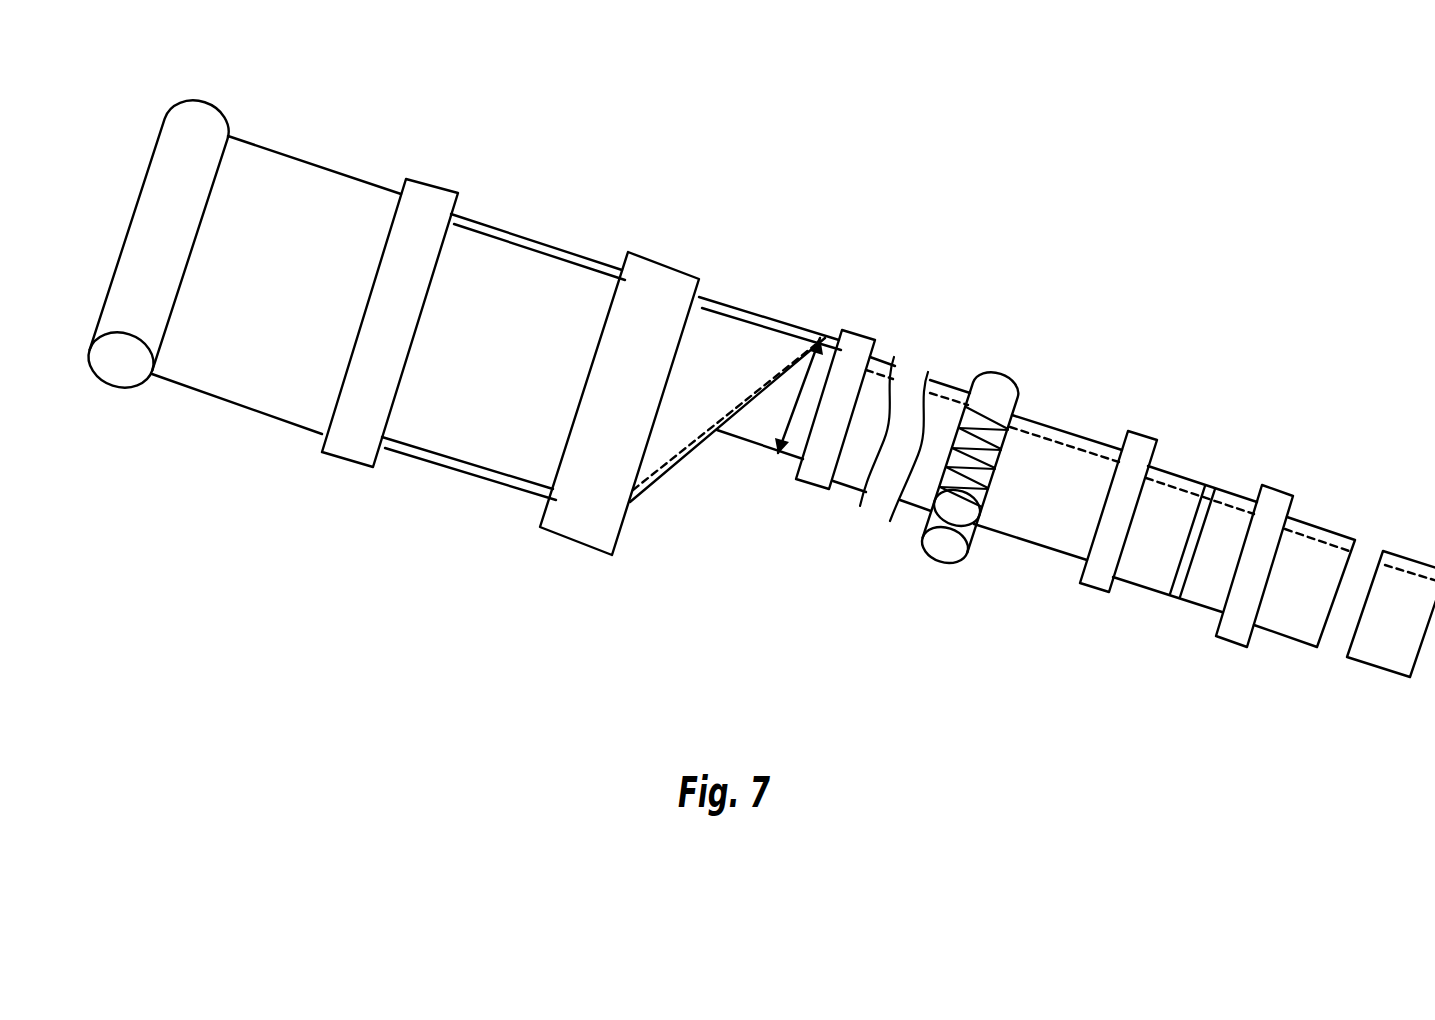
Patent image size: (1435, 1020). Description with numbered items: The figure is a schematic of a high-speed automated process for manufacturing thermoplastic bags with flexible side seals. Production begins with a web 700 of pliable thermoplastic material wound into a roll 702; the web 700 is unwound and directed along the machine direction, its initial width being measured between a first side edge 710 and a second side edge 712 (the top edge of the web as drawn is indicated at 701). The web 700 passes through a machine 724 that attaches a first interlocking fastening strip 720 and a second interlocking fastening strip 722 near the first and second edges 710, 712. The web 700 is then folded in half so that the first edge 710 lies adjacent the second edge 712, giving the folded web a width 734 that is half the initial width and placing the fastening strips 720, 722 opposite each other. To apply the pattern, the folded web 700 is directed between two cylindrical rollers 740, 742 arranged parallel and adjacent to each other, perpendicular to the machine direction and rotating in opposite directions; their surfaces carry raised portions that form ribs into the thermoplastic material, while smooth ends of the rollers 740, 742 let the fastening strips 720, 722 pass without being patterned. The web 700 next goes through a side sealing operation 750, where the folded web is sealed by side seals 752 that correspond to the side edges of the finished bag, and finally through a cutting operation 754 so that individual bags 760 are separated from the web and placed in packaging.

The web 700 is at (710, 129).
The tube upper wall 701 is at (297, 180).
The roll 702 is at (222, 113).
The first side edge 710 is at (263, 416).
The second side edge 712 is at (367, 183).
The first interlocking fastening strip 720 is at (540, 344).
The second interlocking fastening strip 722 is at (477, 465).
The machine 724 is at (460, 197).
The width 734 is at (790, 395).
The cylindrical roller 740 is at (969, 465).
The cylindrical roller 742 is at (923, 540).
The side sealing operation 750 is at (1158, 447).
The side seals 752 is at (1213, 497).
The cutting operation 754 is at (1215, 635).
The individual bags 760 is at (1365, 662).